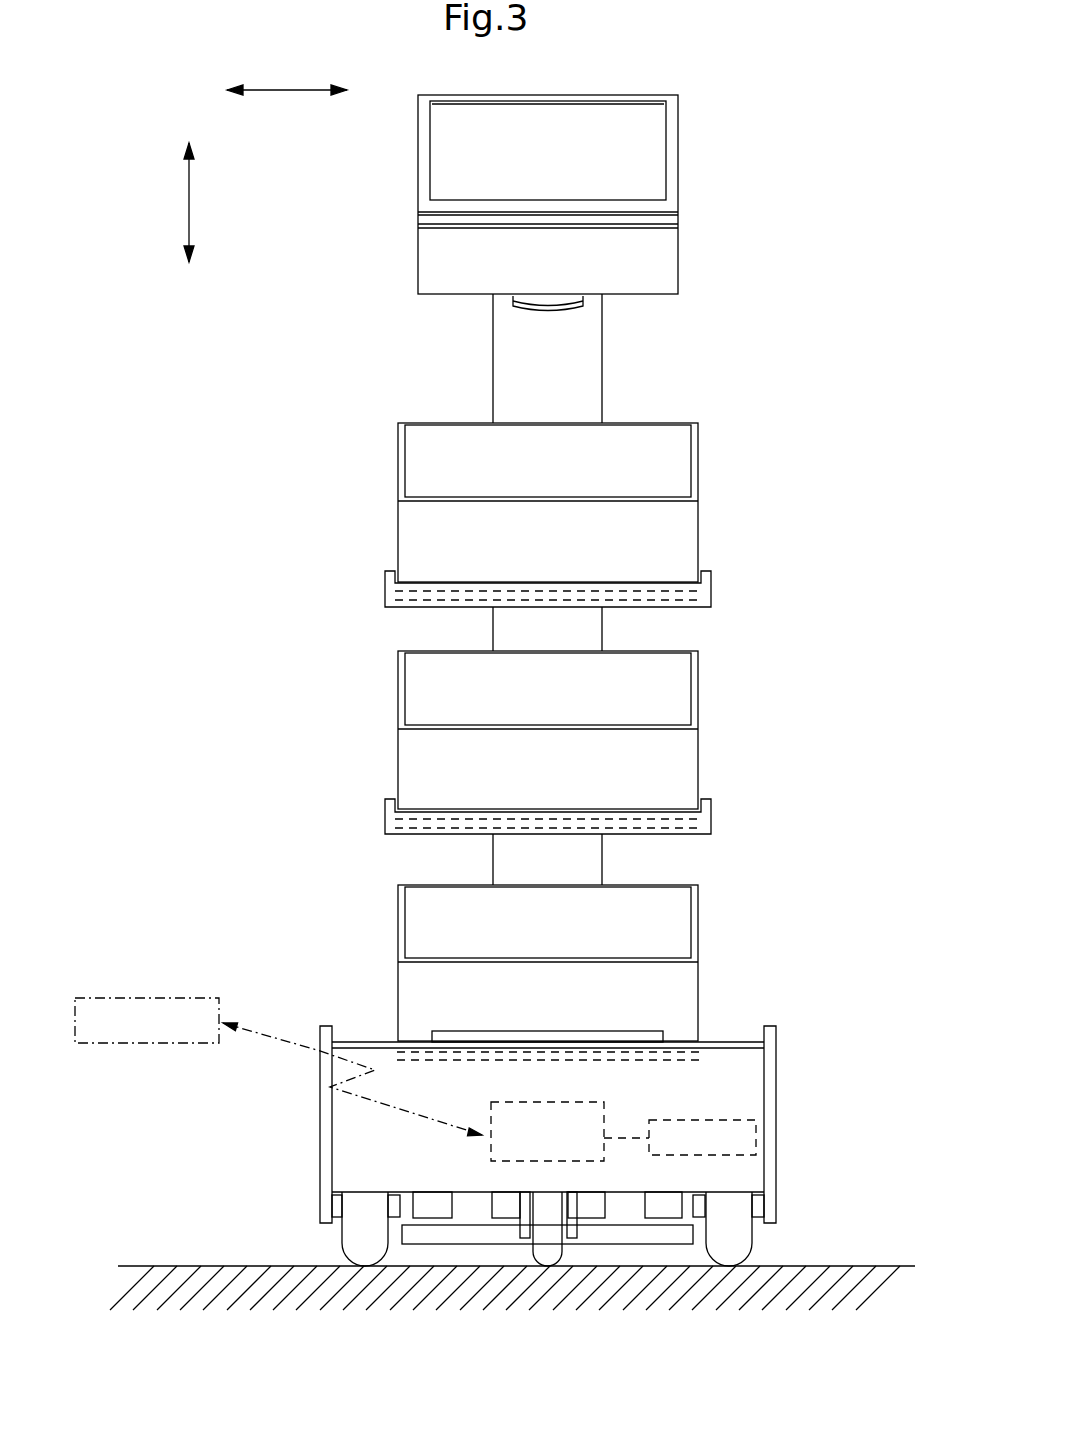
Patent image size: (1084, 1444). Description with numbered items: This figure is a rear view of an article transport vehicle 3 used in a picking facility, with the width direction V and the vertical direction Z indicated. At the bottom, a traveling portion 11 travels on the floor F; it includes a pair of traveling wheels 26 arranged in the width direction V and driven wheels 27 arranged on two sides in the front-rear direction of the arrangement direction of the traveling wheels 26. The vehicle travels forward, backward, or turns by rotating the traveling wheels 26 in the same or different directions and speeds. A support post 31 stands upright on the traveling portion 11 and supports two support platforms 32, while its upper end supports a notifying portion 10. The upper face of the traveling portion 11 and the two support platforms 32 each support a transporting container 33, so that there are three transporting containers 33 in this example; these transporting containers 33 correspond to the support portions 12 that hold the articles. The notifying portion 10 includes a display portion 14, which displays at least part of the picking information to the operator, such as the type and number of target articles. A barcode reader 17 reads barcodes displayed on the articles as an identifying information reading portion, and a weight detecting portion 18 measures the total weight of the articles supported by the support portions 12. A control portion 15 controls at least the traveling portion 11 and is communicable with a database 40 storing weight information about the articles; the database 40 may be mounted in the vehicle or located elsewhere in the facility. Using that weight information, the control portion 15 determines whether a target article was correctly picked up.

The article transport vehicle 3 is at (305, 466).
The notifying portion 10 is at (680, 128).
The display portion 14 is at (550, 128).
The barcode reader 17 is at (526, 308).
The support post 31 is at (598, 372).
The transporting container 33 is at (698, 483).
The support portion 12 is at (594, 712).
The support platform 32 is at (711, 588).
The weight detecting portion 18 is at (385, 590).
The traveling portion 11 is at (763, 1088).
The traveling wheel 26 is at (342, 1243).
The driven wheel 27 is at (560, 1250).
The control portion 15 is at (604, 1115).
The database 40 is at (157, 998).
The floor F is at (222, 1266).
The width direction V is at (287, 75).
The vertical direction Z is at (179, 202).